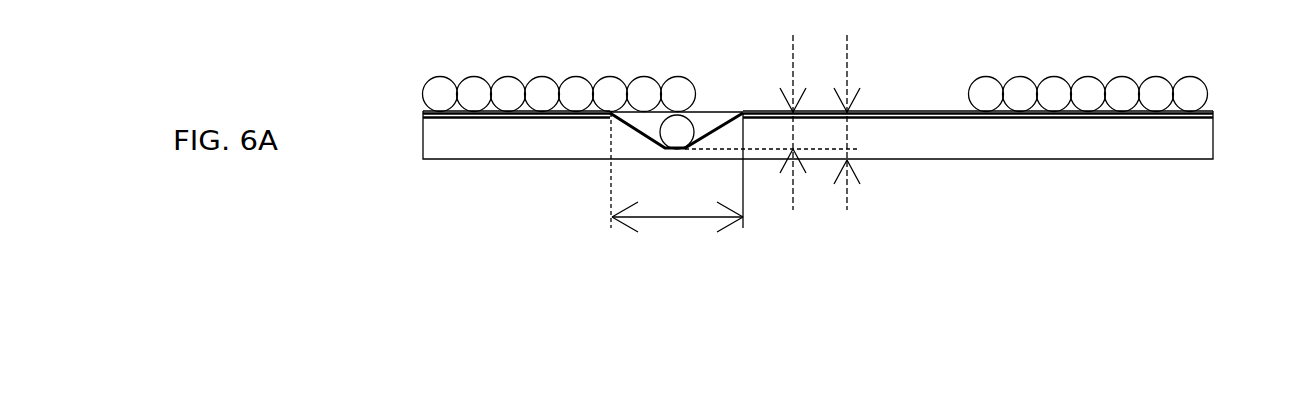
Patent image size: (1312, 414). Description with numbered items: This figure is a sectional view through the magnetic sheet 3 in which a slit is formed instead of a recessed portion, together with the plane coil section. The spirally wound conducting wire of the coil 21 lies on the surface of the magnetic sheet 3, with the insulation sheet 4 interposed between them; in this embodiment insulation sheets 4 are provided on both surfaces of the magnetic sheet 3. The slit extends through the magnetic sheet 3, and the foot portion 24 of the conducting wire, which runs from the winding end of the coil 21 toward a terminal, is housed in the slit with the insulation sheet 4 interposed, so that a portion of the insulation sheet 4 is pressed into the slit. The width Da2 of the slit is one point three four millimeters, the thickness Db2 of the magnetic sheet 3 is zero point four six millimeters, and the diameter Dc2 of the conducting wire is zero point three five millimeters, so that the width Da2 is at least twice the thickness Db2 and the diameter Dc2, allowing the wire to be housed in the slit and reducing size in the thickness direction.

The magnetic sheet 3 is at (450, 143).
The coil 21 is at (420, 82).
The foot portion 24 is at (682, 138).
The insulation sheet 4 is at (743, 160).
The width of the slit Da2 is at (677, 190).
The thickness of magnetic sheet Db2 is at (870, 122).
The diameter of the conducting wire Dc2 is at (771, 105).